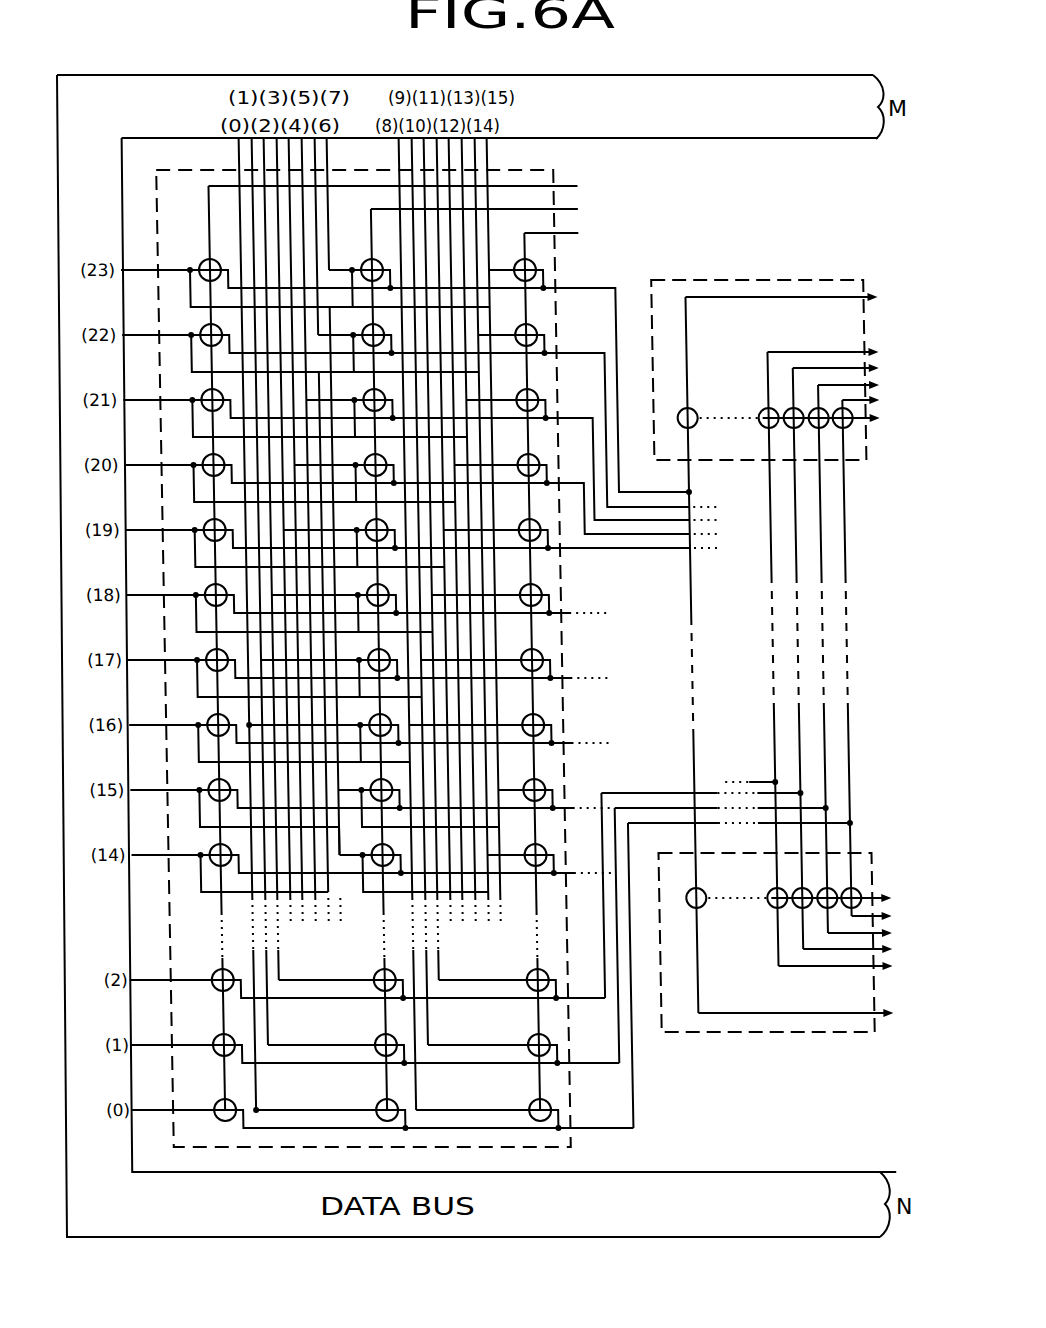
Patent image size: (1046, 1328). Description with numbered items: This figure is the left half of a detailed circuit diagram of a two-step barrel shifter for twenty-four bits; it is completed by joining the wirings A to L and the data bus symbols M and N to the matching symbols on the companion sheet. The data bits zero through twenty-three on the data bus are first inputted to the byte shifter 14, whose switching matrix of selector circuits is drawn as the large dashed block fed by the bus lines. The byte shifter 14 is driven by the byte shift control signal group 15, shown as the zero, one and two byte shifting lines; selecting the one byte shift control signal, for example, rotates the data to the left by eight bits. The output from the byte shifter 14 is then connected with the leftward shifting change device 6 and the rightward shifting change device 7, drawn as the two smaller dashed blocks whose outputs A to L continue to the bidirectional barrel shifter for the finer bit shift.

The leftward shifting change device 6 is at (832, 280).
The rightward shifting change device 7 is at (768, 1032).
The byte shifter 14 is at (540, 1147).
The byte shift control signal group 15 is at (790, 173).